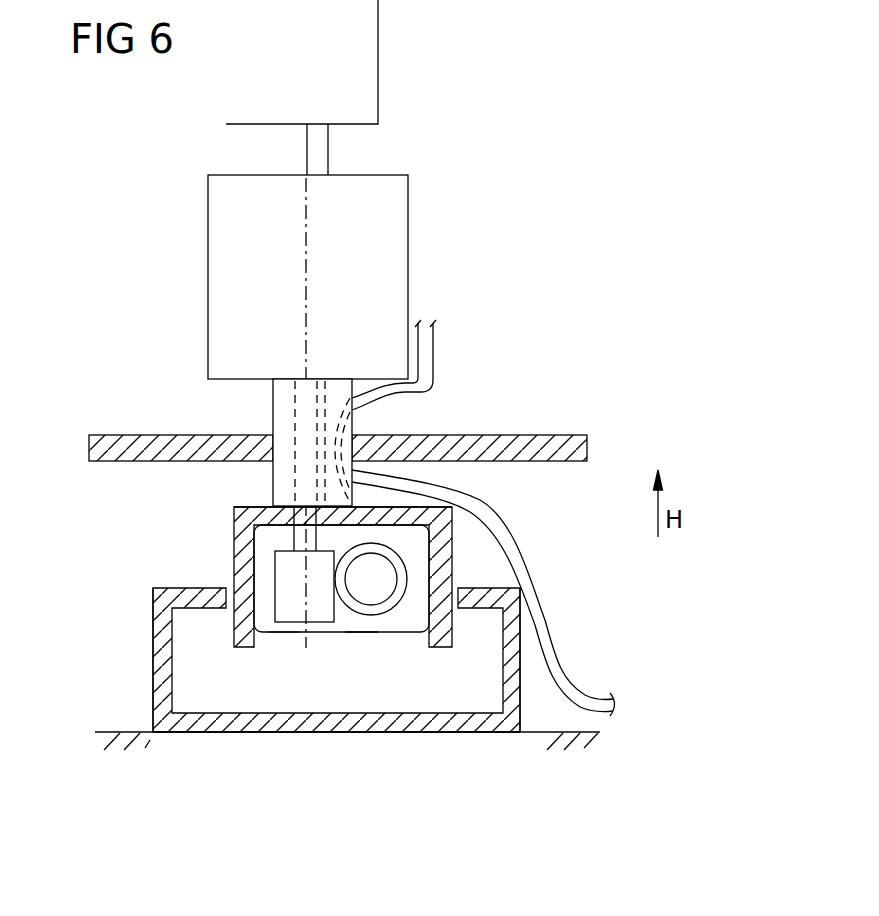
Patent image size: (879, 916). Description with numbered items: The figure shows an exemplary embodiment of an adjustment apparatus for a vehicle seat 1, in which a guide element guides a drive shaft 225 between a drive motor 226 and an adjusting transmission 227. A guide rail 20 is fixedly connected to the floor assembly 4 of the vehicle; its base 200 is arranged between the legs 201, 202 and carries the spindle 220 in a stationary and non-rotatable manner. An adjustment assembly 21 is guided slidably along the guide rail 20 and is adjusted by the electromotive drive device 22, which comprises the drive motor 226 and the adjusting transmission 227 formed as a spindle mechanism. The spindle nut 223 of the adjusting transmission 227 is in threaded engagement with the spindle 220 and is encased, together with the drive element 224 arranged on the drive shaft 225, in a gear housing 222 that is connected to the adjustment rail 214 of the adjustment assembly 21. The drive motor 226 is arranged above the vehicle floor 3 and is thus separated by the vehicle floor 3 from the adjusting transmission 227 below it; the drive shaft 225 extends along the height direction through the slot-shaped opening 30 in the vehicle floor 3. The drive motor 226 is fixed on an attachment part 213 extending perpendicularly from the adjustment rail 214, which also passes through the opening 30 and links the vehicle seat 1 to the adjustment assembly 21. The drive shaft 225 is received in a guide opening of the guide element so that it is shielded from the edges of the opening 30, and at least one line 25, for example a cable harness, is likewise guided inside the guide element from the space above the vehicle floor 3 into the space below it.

The vehicle seat 1 is at (415, 62).
The attachment part 213 is at (319, 152).
The drive device 22 is at (442, 204).
The drive motor 226 is at (380, 272).
The line 25 is at (428, 360).
The vehicle floor 3 is at (545, 437).
The slot-shaped opening 30 is at (352, 440).
The floor assembly 4 is at (592, 718).
The adjustment assembly 21 is at (435, 552).
The adjustment rail 214 is at (468, 516).
The adjusting transmission 227 is at (392, 655).
The drive shaft 225 is at (302, 533).
The drive element 224 is at (288, 579).
The spindle 220 is at (383, 580).
The gear housing 222 is at (287, 635).
The spindle nut 223 is at (357, 612).
The guide rail 20 is at (358, 728).
The leg 201 is at (155, 672).
The leg 202 is at (513, 670).
The base 200 is at (465, 723).